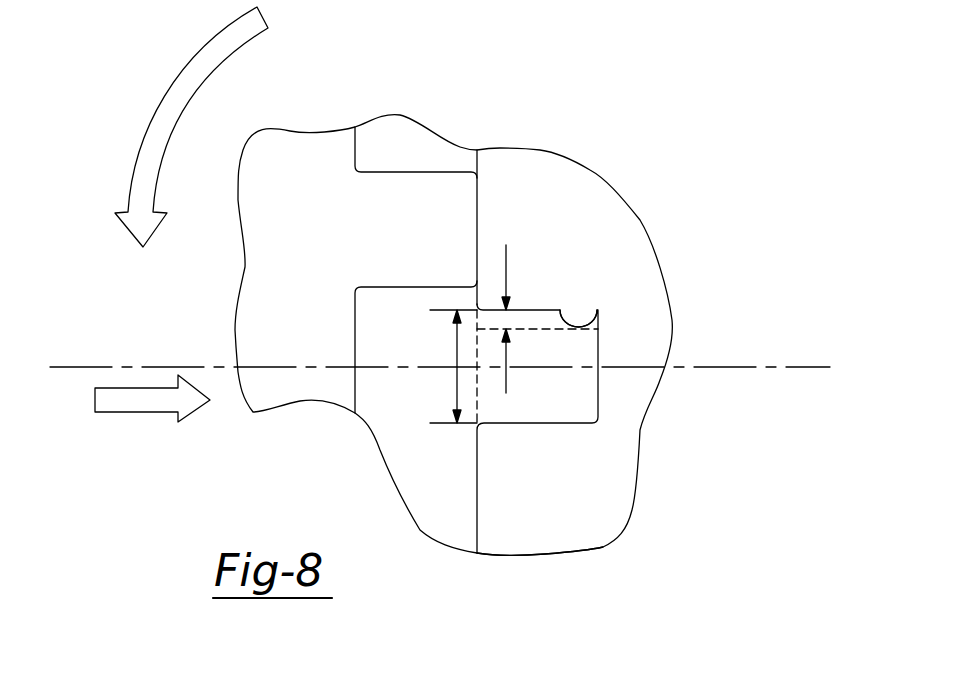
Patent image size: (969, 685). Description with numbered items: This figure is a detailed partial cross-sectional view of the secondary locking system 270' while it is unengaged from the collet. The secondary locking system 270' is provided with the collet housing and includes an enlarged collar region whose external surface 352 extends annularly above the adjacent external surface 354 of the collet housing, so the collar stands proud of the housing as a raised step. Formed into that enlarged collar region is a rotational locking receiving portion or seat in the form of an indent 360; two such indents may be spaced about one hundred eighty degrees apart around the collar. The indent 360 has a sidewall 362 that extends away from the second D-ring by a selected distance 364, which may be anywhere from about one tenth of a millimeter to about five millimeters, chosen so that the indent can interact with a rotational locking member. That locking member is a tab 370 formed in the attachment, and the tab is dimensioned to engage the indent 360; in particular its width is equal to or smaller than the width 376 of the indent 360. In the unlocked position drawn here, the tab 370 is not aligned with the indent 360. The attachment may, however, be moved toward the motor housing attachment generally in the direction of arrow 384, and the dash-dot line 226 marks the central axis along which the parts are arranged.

The axis 226 is at (783, 367).
The secondary locking system 270' is at (494, 296).
The external surface 352 is at (613, 515).
The external surface of the collet housing 354 is at (382, 152).
The indent 360 is at (599, 391).
The sidewall 362 is at (573, 327).
The distance 364 is at (503, 318).
The tab 370 is at (440, 203).
The width of the indent 376 is at (455, 385).
The arrow 384 is at (137, 410).